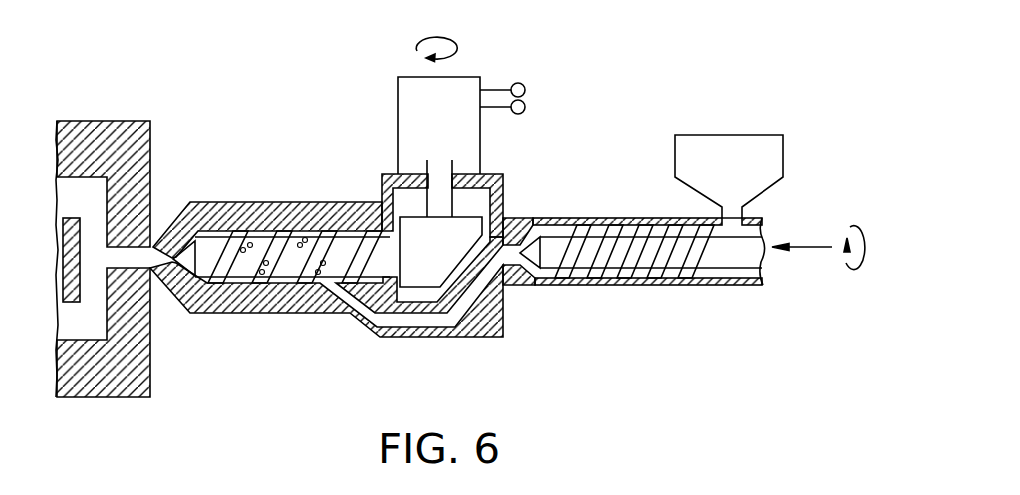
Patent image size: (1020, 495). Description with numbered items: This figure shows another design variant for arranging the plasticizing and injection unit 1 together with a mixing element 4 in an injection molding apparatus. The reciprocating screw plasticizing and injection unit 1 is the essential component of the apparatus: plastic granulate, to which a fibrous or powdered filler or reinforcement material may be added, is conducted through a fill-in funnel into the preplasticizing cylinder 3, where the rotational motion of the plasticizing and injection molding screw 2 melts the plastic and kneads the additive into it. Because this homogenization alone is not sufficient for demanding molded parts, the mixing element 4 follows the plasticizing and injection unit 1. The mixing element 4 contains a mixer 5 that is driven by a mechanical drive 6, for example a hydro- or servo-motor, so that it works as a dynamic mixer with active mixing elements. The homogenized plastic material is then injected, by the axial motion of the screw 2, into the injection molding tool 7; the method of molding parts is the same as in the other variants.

The reciprocating screw plasticizing and injection unit 1 is at (647, 198).
The plasticizing and injection molding screw 2 is at (643, 252).
The preplasticizing cylinder 3 is at (600, 222).
The mixing element 4 is at (243, 303).
The mixer 5 is at (270, 263).
The mechanical drive 6 is at (405, 125).
The injection molding tool 7 is at (93, 128).